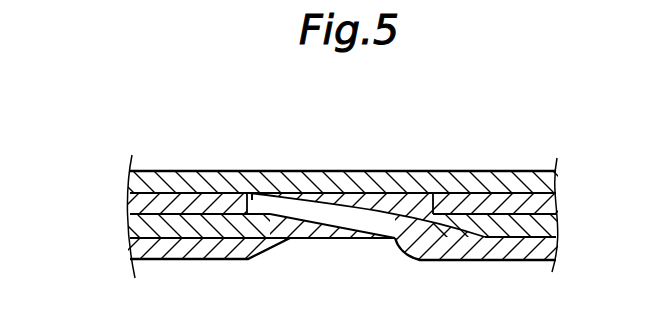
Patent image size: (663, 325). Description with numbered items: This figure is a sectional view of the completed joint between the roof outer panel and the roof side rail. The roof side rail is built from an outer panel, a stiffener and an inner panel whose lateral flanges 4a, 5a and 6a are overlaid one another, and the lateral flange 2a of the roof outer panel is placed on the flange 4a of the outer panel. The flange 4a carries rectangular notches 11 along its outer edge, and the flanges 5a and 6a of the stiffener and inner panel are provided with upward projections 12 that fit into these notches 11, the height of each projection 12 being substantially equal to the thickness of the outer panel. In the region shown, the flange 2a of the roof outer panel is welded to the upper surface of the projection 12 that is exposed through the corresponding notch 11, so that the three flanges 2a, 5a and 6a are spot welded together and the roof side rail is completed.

The lateral flange of the roof outer panel 2a is at (175, 177).
The flange portion of the outer panel 4a is at (132, 207).
The flange portion of the stiffener 5a is at (133, 223).
The flange portion of the inner panel 6a is at (158, 245).
The rectangular notch 11 is at (252, 207).
The upward projection 12 is at (365, 200).